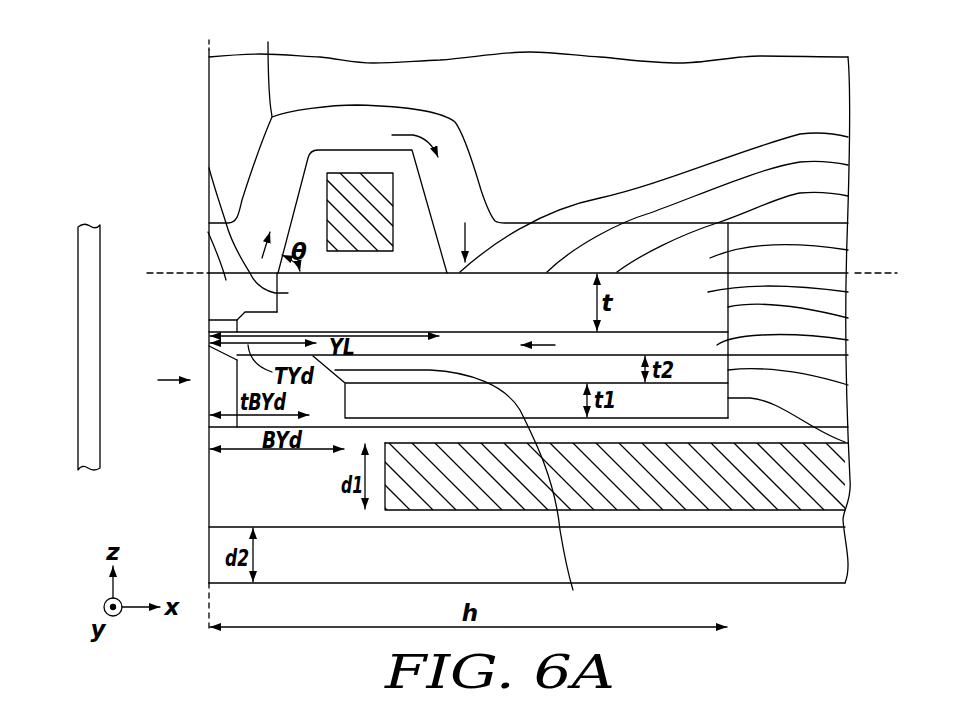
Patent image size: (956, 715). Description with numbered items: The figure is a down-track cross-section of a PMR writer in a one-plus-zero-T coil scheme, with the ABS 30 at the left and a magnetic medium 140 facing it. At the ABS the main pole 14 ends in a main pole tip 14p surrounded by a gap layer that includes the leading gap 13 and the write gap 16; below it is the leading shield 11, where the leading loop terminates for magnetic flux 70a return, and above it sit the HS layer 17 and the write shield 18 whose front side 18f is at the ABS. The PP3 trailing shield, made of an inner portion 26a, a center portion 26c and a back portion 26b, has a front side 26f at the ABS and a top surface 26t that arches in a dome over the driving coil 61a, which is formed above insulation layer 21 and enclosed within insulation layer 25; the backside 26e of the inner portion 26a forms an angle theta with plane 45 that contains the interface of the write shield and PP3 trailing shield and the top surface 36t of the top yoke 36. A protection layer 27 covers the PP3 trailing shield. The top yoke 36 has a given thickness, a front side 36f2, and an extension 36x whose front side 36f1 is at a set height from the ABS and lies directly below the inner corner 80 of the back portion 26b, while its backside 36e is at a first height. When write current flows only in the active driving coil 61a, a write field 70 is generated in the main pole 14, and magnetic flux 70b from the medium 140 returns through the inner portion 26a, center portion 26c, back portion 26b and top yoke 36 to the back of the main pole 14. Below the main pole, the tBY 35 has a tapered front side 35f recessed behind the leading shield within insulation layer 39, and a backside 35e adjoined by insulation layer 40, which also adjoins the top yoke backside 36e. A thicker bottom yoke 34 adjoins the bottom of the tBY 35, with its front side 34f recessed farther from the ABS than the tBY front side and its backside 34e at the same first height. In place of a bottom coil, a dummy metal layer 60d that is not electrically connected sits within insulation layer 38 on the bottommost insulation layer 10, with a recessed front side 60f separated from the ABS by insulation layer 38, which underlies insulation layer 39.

The bottommost insulation layer 10 is at (833, 557).
The leading shield 11 is at (207, 398).
The leading gap 13 is at (208, 347).
The main pole 14 is at (848, 340).
The main pole tip 14p is at (222, 327).
The write gap 16 is at (216, 315).
The hot seed layer 17 is at (208, 296).
The write shield 18 is at (208, 240).
The front side of write shield 18f is at (208, 290).
The insulation layer 21 is at (209, 169).
The insulation layer 25 is at (870, 223).
The PP3 inner portion 26a is at (270, 175).
The PP3 back portion 26b is at (460, 165).
The PP3 center portion 26c is at (360, 135).
The backside of PP3 inner portion 26e is at (305, 172).
The front side of PP3 trailing shield 26f is at (208, 232).
The PP3 trailing shield top surface 26t is at (397, 103).
The protection layer 27 is at (838, 95).
The air bearing surface 30 is at (208, 337).
The bottom yoke 34 is at (625, 400).
The bottom yoke backside 34e is at (848, 443).
The bottom yoke front side 34f is at (345, 403).
The tBY layer 35 is at (698, 375).
The tBY backside 35e is at (848, 383).
The tBY front side 35f is at (466, 496).
The top yoke 36 is at (848, 292).
The top yoke backside 36e is at (848, 318).
The front side of top yoke extension 36f1 is at (848, 167).
The front side of top yoke 36f2 is at (848, 138).
The top yoke top surface 36t is at (848, 197).
The top yoke extension 36x is at (418, 260).
The insulation layer 38 is at (222, 463).
The insulation layer 39 is at (838, 418).
The insulation layer 40 is at (833, 348).
The plane 45- 45 is at (522, 272).
The dummy metal layer 60d is at (412, 492).
The bucking coil front side 60f is at (383, 497).
The driving coil 61a is at (333, 180).
The write field 70 is at (551, 344).
The magnetic flux return through leading loop 70a is at (173, 365).
The magnetic flux return through trailing loop 70b is at (378, 188).
The inner corner of PP3 back portion 80 is at (495, 272).
The magnetic medium 140 is at (90, 470).